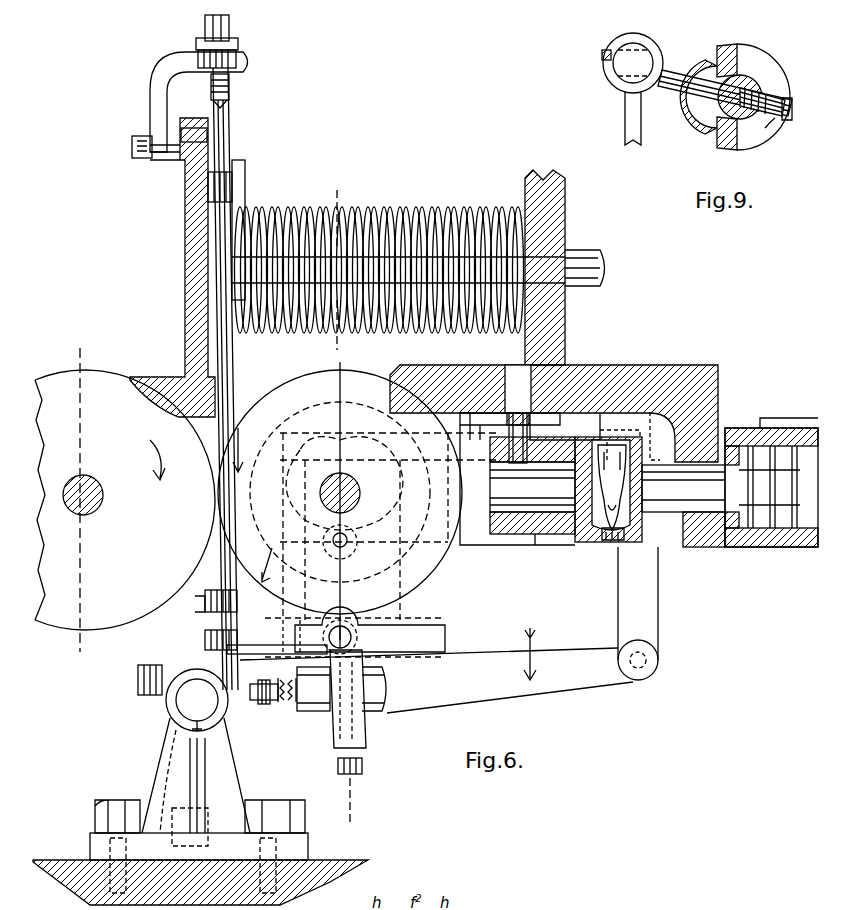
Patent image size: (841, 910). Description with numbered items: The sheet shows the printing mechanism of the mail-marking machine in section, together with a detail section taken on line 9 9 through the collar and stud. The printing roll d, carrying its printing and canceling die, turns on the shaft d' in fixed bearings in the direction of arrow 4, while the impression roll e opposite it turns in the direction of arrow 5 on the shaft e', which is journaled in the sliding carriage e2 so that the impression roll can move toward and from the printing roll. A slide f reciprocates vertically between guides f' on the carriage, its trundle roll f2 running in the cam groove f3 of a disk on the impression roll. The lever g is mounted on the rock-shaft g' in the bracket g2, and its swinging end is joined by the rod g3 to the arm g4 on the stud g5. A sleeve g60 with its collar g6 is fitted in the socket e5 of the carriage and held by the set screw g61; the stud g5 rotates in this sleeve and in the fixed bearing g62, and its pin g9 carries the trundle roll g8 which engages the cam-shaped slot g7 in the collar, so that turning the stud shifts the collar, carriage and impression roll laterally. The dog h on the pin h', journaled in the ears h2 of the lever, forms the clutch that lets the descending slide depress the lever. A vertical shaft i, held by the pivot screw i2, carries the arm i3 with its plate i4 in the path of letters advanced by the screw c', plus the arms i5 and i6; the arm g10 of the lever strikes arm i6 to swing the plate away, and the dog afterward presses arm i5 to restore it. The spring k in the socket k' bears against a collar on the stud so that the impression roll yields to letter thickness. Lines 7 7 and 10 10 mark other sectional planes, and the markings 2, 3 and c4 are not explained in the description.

In FIG. 6, the vertical shaft or spindle i is at (230, 128).
In FIG. 6, the pivot screw i2 is at (228, 85).
In FIG. 6, the arm i3 is at (240, 652).
In FIG. 6, the plate i4 is at (232, 203).
In FIG. 6, the arm i5 is at (290, 648).
In FIG. 6, the arm i6 is at (207, 600).
In FIG. 6, the screw c' is at (398, 254).
In FIG. 6, the shaft c4 is at (585, 258).
In FIG. 6, the printing roll d is at (125, 507).
In FIG. 6, the shaft d' is at (94, 503).
In FIG. 6, the impression roll e is at (359, 501).
In FIG. 6, the shaft e' is at (384, 516).
In FIG. 6, the sliding carriage e2 is at (478, 440).
In FIG. 6, the socket e5 is at (538, 545).
In FIG. 6, the slide f is at (355, 632).
In FIG. 6, the guides f' is at (347, 632).
In FIG. 6, the trundle roll f2 is at (365, 526).
In FIG. 6, the cam groove f3 is at (338, 624).
In FIG. 6, the lever g is at (449, 689).
In FIG. 6, the stud or rock-shaft g' is at (177, 700).
In FIG. 6, the bracket g2 is at (170, 770).
In FIG. 6, the rod g3 is at (660, 600).
In FIG. 9, the rod g3 is at (625, 115).
In FIG. 9, the arm g4 is at (667, 76).
In FIG. 6, the stud g5 is at (690, 505).
In FIG. 9, the stud g5 is at (708, 120).
In FIG. 6, the collar g6 is at (600, 440).
In FIG. 9, the collar g6 is at (738, 150).
In FIG. 6, the cam-shaped slot g7 is at (636, 432).
In FIG. 9, the cam-shaped slot g7 is at (768, 128).
In FIG. 6, the trundle roll g8 is at (600, 528).
In FIG. 9, the trundle roll g8 is at (770, 86).
In FIG. 6, the pin g9 is at (618, 540).
In FIG. 9, the pin g9 is at (793, 106).
In FIG. 6, the arm g10 is at (160, 665).
In FIG. 6, the sleeve g60 is at (512, 500).
In FIG. 6, the set screw g61 is at (532, 418).
In FIG. 6, the fixed bearing g62 is at (700, 522).
In FIG. 6, the dog or clutch h is at (337, 712).
In FIG. 6, the pin h' is at (264, 716).
In FIG. 6, the ears h2 is at (300, 705).
In FIG. 6, the spring k is at (771, 506).
In FIG. 6, the socket k' is at (789, 412).
In FIG. 6, the arrow 2 is at (239, 442).
In FIG. 6, the arrow 3 is at (265, 565).
In FIG. 6, the arrow 4 is at (156, 452).
In FIG. 6, the arrow 5 is at (536, 660).
In FIG. 6, the section line 7 is at (343, 504).
In FIG. 6, the section line 9 is at (608, 493).
In FIG. 6, the section line 10 is at (81, 497).